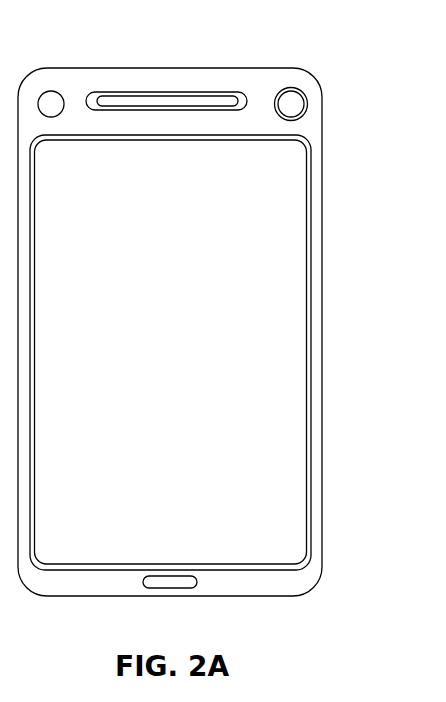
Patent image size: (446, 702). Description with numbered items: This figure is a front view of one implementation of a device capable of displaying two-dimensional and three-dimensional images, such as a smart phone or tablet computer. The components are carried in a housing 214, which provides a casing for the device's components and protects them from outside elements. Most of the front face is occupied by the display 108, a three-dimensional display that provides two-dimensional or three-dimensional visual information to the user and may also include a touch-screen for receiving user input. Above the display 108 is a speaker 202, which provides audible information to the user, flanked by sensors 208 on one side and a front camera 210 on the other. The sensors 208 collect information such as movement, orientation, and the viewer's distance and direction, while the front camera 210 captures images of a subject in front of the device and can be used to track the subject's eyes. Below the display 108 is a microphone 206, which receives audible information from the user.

The display 108 is at (258, 142).
The speaker 202 is at (178, 97).
The microphone 206 is at (197, 581).
The sensors 208 is at (51, 91).
The front camera 210 is at (291, 88).
The housing 214 is at (322, 514).